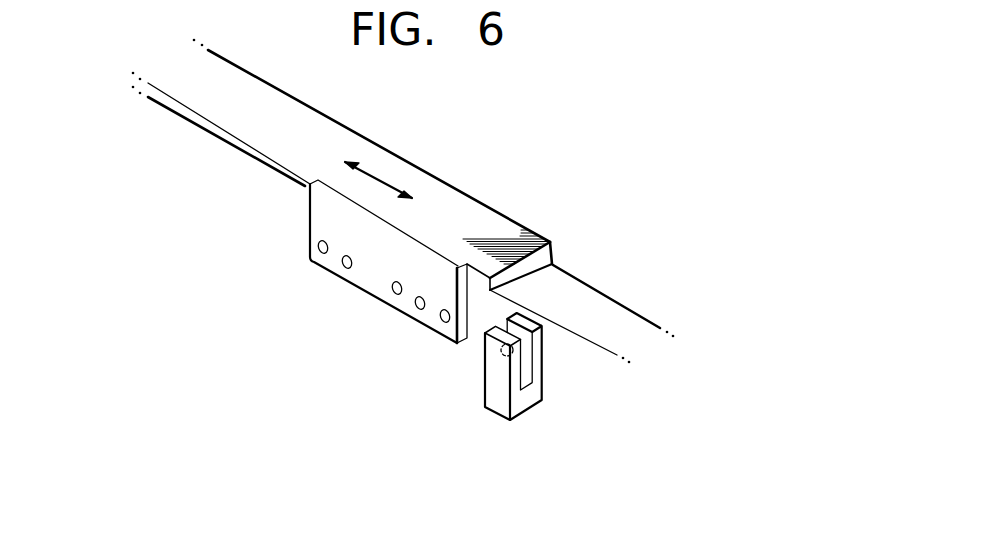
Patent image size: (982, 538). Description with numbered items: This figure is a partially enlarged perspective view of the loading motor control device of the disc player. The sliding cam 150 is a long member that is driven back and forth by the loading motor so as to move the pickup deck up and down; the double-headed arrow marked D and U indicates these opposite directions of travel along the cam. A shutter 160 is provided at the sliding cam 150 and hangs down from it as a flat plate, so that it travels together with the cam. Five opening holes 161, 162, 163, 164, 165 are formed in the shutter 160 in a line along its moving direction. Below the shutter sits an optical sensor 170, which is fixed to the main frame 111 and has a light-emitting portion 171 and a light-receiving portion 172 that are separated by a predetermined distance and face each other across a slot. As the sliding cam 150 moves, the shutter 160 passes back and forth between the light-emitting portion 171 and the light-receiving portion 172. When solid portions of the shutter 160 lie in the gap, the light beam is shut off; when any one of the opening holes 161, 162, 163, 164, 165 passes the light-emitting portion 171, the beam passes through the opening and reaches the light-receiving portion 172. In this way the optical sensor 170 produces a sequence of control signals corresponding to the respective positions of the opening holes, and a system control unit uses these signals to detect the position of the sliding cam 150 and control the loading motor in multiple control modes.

The main frame 111 is at (592, 303).
The sliding cam 150 is at (467, 210).
The shutter 160 is at (367, 277).
The opening hole 161 is at (442, 320).
The opening hole 162 is at (417, 308).
The opening hole 163 is at (391, 293).
The opening hole 164 is at (340, 265).
The opening hole 165 is at (318, 245).
The optical sensor 170 is at (530, 394).
The light-emitting portion 171 is at (522, 342).
The light-receiving portion 172 is at (503, 350).